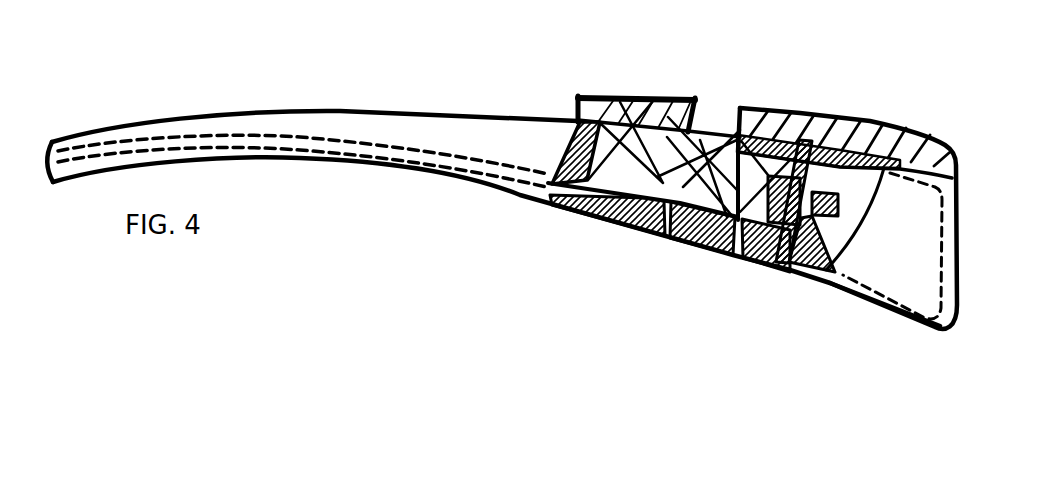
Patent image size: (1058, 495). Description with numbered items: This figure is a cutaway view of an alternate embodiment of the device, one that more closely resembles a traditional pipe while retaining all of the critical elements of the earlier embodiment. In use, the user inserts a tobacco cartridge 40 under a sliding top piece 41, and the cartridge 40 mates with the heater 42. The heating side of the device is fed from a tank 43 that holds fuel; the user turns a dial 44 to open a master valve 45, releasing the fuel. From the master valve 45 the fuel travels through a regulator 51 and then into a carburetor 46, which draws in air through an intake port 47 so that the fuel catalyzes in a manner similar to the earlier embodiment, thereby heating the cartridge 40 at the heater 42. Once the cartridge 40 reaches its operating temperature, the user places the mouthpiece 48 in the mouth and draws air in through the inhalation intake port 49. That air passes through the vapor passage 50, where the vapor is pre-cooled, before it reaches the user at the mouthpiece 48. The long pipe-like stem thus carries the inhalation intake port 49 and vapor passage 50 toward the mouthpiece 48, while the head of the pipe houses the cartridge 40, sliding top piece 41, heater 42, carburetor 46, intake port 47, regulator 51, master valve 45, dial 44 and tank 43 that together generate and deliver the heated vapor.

The tobacco cartridge 40 is at (629, 132).
The sliding top piece 41 is at (850, 120).
The heater 42 is at (702, 150).
The tank 43 is at (908, 273).
The dial 44 is at (777, 264).
The master valve 45 is at (817, 190).
The carburetor 46 is at (800, 125).
The intake port 47 is at (738, 256).
The mouthpiece 48 is at (410, 112).
The inhalation intake port 49 is at (670, 240).
The vapor passage 50 is at (385, 152).
The regulator 51 is at (767, 261).